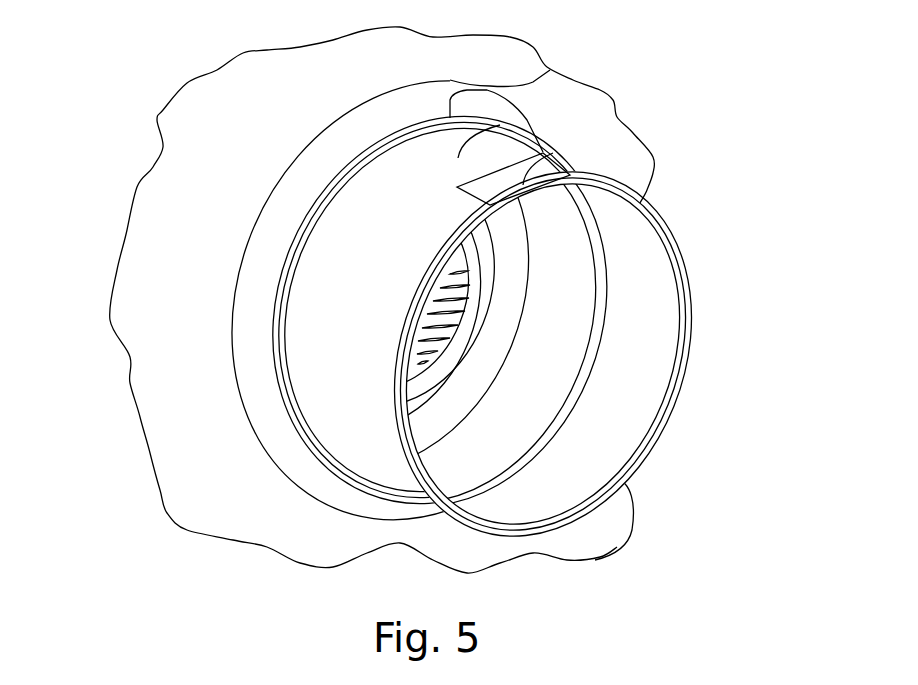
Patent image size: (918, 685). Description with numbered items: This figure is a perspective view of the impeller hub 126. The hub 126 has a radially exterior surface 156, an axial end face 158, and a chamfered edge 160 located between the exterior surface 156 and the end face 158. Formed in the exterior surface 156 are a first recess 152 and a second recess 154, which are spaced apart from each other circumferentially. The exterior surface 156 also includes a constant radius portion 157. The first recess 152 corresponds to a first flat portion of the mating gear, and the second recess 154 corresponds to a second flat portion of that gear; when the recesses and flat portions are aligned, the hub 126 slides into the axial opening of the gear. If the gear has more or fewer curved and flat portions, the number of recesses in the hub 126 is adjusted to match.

The hub 126 is at (550, 70).
The first recess 152 is at (543, 152).
The second recess 154 is at (590, 540).
The radially exterior surface 156 is at (520, 130).
The constant radius portion 157 is at (362, 184).
The axial end face 158 is at (680, 270).
The chamfered edge 160 is at (397, 373).